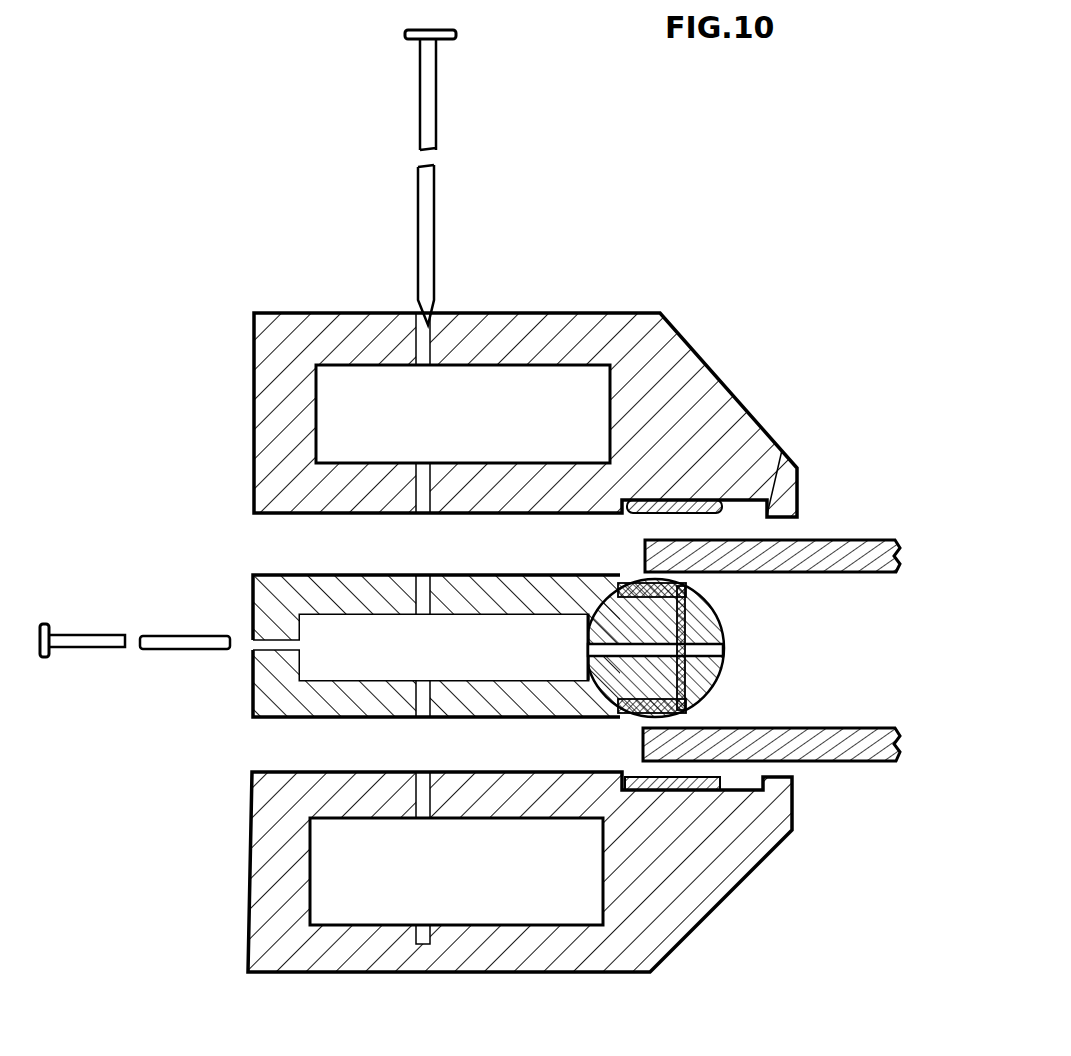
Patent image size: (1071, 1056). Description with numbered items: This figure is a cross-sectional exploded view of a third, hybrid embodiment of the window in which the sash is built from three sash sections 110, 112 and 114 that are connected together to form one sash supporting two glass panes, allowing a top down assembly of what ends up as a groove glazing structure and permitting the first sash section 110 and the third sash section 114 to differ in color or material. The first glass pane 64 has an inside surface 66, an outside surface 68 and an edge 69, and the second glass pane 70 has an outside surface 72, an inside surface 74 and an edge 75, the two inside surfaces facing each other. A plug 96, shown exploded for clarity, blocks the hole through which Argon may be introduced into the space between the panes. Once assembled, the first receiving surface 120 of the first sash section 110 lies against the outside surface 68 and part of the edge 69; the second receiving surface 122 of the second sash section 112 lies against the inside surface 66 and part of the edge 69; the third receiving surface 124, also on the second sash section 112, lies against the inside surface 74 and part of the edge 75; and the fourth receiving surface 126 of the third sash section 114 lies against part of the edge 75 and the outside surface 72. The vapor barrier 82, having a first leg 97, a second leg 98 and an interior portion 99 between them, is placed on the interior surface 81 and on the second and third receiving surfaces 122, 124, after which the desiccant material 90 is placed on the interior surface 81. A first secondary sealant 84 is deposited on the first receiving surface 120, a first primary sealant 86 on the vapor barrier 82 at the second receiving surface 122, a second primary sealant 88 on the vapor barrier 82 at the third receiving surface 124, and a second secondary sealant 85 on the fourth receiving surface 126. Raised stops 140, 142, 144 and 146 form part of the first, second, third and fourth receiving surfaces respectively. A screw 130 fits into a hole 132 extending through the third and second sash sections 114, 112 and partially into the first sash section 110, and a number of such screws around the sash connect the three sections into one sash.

The first glass pane 64 is at (850, 745).
The inside surface 66 is at (786, 730).
The outside surface 68 is at (866, 761).
The edge 69 is at (645, 752).
The second glass pane 70 is at (845, 552).
The outside surface 72 is at (818, 540).
The inside surface 74 is at (830, 572).
The edge 75 is at (648, 545).
The interior surface 81 is at (690, 685).
The vapor barrier 82 is at (690, 620).
The first secondary sealant 84 is at (712, 788).
The second secondary sealant 85 is at (672, 505).
The first primary sealant 86 is at (652, 700).
The second primary sealant 88 is at (648, 624).
The desiccant material 90 is at (712, 664).
The plug 96 is at (96, 647).
The first leg 97 is at (640, 718).
The second leg 98 is at (648, 592).
The interior portion 99 is at (695, 640).
The first sash section 110 is at (545, 972).
The second sash section 112 is at (302, 708).
The third sash section 114 is at (300, 500).
The first receiving surface 120 is at (780, 777).
The second receiving surface 122 is at (588, 672).
The third receiving surface 124 is at (676, 588).
The fourth receiving surface 126 is at (774, 490).
The screw 130 is at (436, 104).
The hole 132 is at (430, 322).
The stop 140 is at (782, 786).
The stop 142 is at (686, 708).
The stop 144 is at (686, 590).
The stop 146 is at (792, 485).